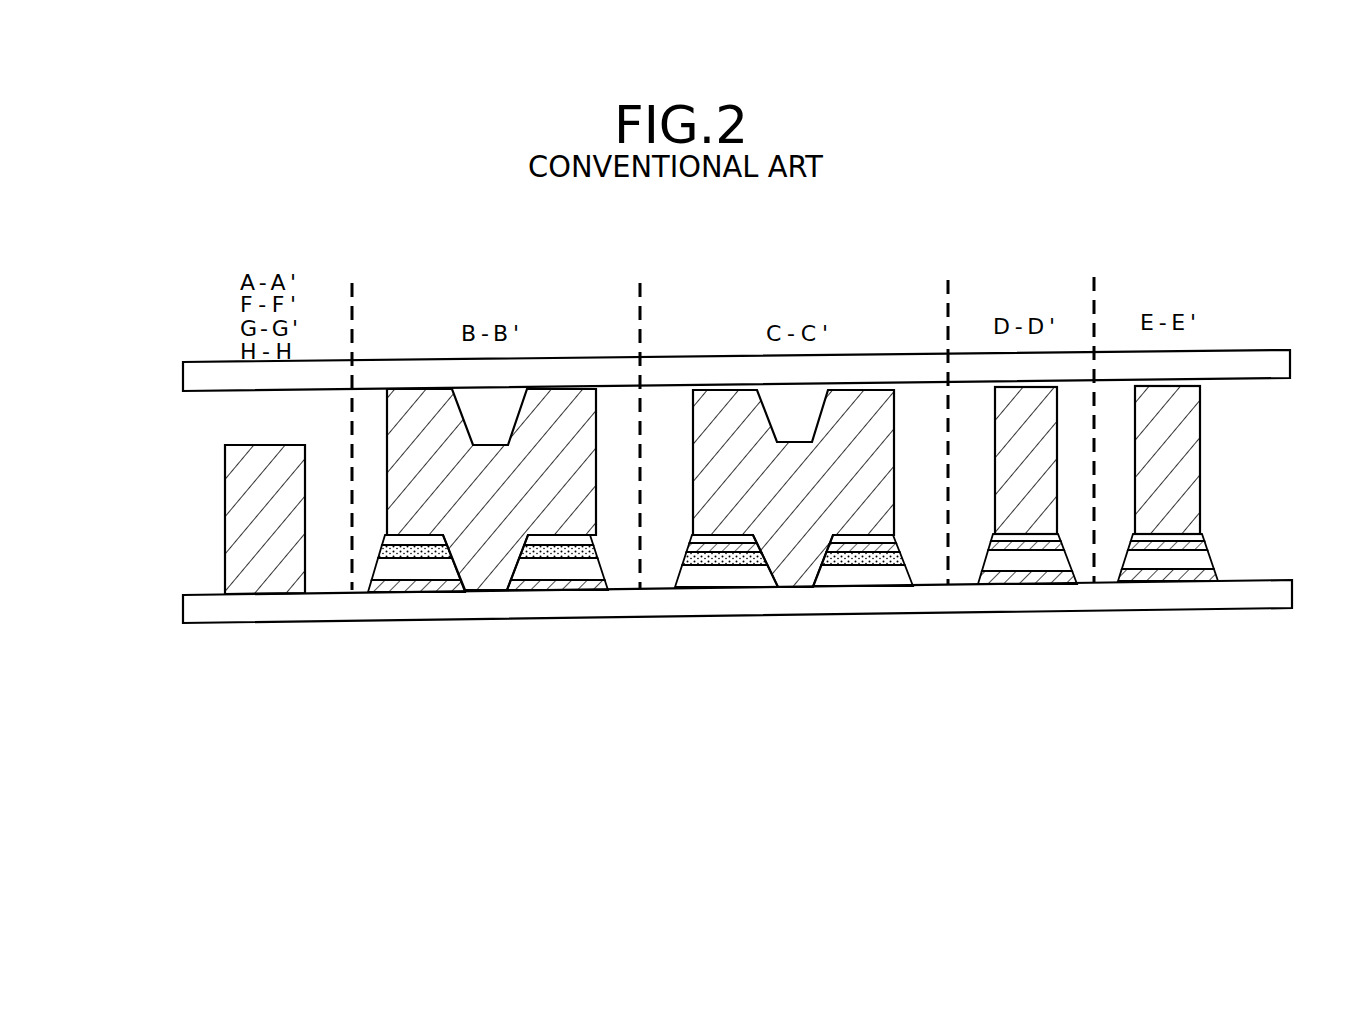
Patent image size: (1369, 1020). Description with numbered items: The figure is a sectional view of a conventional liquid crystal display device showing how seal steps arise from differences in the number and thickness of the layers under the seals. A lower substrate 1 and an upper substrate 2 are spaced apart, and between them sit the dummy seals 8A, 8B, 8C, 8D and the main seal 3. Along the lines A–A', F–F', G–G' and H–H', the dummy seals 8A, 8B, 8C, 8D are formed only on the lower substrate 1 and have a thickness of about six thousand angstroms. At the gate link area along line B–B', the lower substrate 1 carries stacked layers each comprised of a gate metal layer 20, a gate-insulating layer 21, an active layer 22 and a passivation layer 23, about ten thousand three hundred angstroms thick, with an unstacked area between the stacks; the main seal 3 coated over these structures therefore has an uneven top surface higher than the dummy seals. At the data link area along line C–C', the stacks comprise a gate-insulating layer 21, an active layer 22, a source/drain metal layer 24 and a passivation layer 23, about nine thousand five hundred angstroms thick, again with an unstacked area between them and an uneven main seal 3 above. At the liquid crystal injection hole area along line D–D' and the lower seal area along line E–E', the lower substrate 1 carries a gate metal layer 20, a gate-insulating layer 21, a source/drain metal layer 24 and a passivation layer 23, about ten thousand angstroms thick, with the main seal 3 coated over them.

The lower substrate 1 is at (1292, 592).
The upper substrate 2 is at (1290, 357).
The main seal 3 is at (393, 474).
The dummy seal 8A is at (170, 519).
The dummy seal 8B is at (170, 519).
The dummy seal 8C is at (170, 519).
The dummy seal 8D is at (228, 522).
The gate metal layer 20 is at (384, 593).
The gate-insulating layer 21 is at (412, 575).
The active layer 22 is at (428, 552).
The passivation layer 23 is at (443, 540).
The source/drain metal layer 24 is at (743, 547).